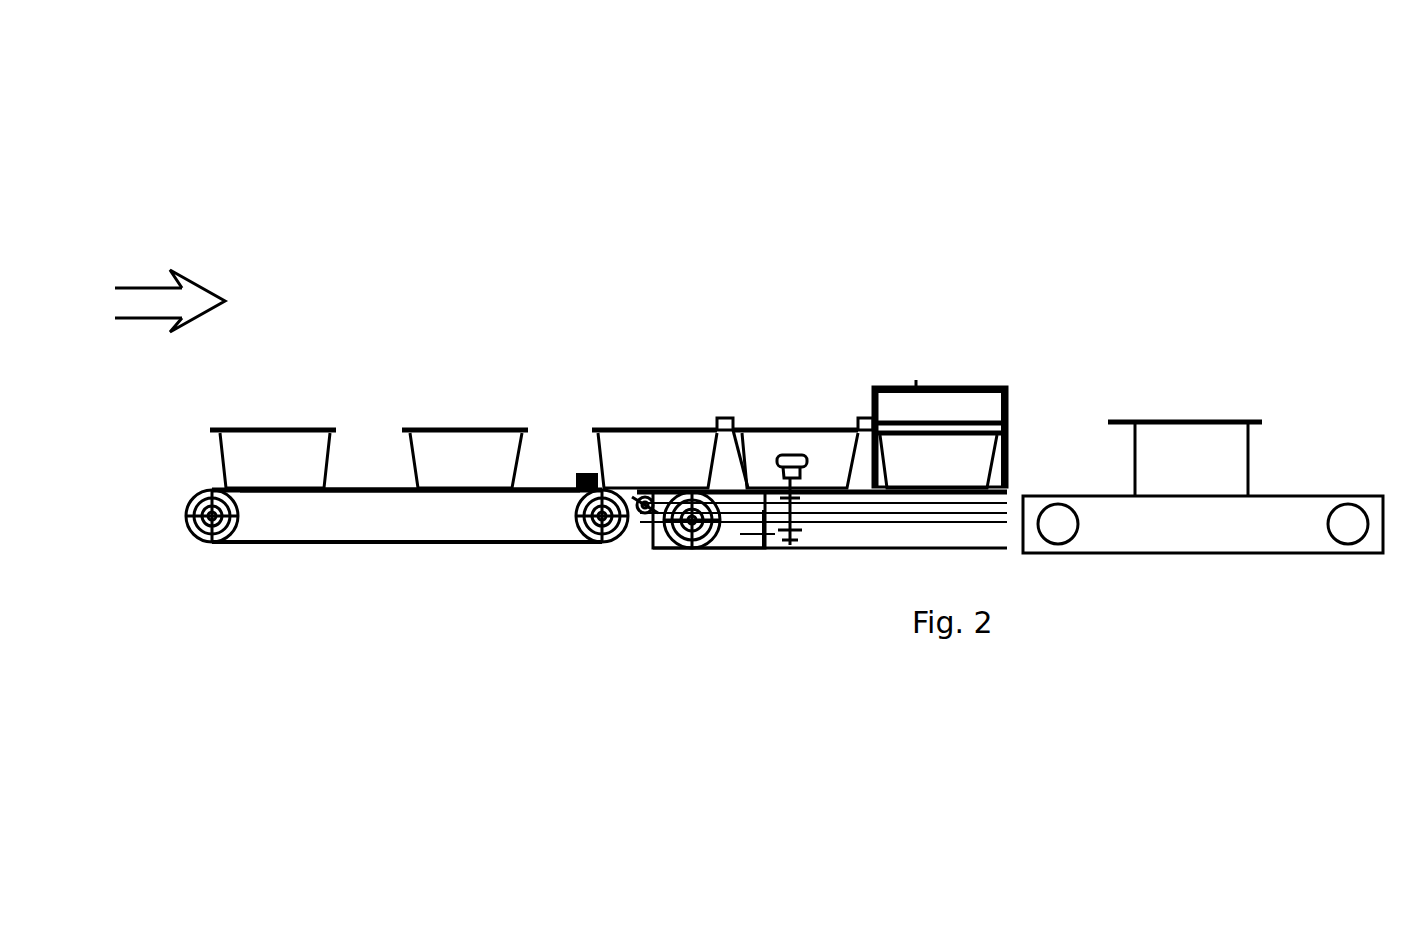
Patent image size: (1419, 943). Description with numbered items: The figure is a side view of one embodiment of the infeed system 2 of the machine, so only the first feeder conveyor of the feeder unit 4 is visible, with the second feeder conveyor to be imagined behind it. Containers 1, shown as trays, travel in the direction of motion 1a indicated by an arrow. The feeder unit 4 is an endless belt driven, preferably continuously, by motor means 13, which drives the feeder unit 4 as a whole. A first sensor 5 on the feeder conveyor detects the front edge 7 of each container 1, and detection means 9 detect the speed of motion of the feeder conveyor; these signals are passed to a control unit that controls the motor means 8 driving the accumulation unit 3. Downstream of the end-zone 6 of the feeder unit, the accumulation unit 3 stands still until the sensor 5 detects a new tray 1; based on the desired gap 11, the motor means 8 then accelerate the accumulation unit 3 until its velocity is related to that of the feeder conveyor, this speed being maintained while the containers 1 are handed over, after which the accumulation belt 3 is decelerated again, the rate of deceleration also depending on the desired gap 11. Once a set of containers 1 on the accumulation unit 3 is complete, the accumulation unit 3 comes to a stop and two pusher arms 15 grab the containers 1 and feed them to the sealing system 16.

The direction of motion 1a is at (196, 282).
The containers 1 is at (243, 445).
The infeed system 2 is at (1048, 192).
The accumulation unit 3 is at (1002, 333).
The feeder unit 4 is at (295, 517).
The first sensor 5 is at (514, 431).
The end-zone of the feeder unit 6 is at (619, 306).
The front edge of the container 7 is at (325, 485).
The motor means 8 is at (713, 547).
The detection means 9 is at (444, 587).
The desired gap 11 is at (733, 418).
The motor means 13 is at (605, 542).
The pusher arms 15 is at (916, 387).
The sealing system 16 is at (1305, 322).